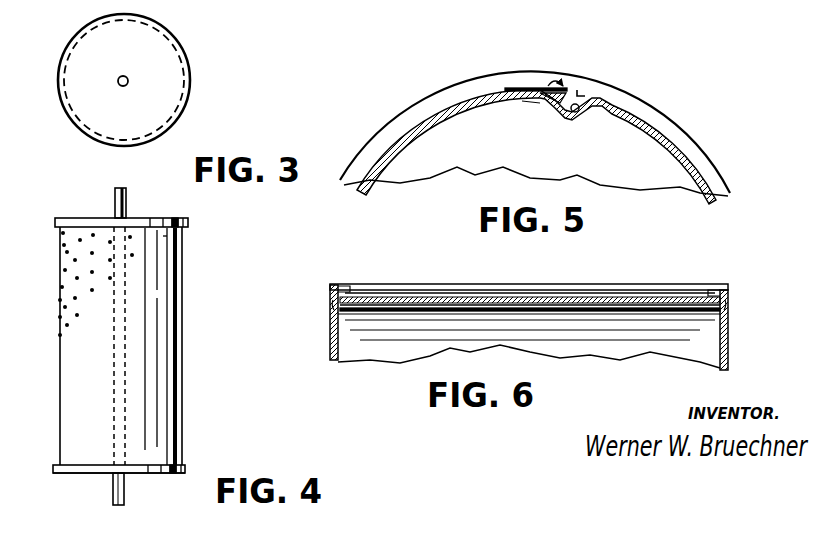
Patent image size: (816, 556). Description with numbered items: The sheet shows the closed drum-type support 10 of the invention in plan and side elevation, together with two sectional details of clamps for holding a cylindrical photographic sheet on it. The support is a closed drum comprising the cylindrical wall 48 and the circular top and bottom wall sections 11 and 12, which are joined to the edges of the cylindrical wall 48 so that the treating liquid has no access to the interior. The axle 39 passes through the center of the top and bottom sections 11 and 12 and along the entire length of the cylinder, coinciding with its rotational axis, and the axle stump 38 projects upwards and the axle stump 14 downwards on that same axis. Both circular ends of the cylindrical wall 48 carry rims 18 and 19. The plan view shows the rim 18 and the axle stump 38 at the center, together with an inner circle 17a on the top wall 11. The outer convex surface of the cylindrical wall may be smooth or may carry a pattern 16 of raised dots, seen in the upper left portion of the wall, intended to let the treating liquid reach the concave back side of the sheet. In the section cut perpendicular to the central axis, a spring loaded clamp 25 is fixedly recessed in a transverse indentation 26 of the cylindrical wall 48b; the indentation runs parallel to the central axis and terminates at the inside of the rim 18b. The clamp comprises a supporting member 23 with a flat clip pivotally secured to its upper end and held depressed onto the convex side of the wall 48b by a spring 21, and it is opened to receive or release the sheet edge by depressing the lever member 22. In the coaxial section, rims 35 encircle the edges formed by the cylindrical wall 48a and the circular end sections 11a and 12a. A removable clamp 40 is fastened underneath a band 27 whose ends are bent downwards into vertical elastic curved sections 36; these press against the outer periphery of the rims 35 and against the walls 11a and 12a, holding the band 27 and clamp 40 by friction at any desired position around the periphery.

In FIG. 4, the drum-type support 10 is at (186, 334).
In FIG. 3, the top wall section 11 is at (170, 70).
In FIG. 4, the top wall section 11 is at (66, 217).
In FIG. 6, the circular end section 11a is at (728, 360).
In FIG. 4, the bottom wall section 12 is at (60, 474).
In FIG. 6, the circular end section 12a is at (333, 358).
In FIG. 4, the axle stump 14 is at (112, 486).
In FIG. 4, the pattern of raised dots 16 is at (84, 242).
In FIG. 3, the inner screen circle 17a is at (183, 107).
In FIG. 3, the rim 18 is at (164, 36).
In FIG. 4, the rim 18 is at (185, 469).
In FIG. 5, the rim 18b is at (672, 112).
In FIG. 4, the rim 19 is at (183, 223).
In FIG. 5, the spring 21 is at (555, 99).
In FIG. 5, the lever member 22 is at (579, 90).
In FIG. 5, the supporting member 23 is at (530, 104).
In FIG. 5, the spring loaded clamp 25 is at (524, 88).
In FIG. 5, the transverse indentation 26 is at (577, 112).
In FIG. 6, the band 27 is at (643, 287).
In FIG. 6, the rims 35 is at (330, 290).
In FIG. 6, the vertical elastic curved sections 36 is at (334, 305).
In FIG. 3, the axle stump 38 is at (119, 78).
In FIG. 4, the axle stump 38 is at (128, 200).
In FIG. 4, the axle 39 is at (110, 352).
In FIG. 6, the clamp 40 is at (483, 284).
In FIG. 4, the cylindrical wall 48 is at (184, 279).
In FIG. 6, the cylindrical wall 48a is at (729, 326).
In FIG. 5, the cylindrical wall 48b is at (396, 135).